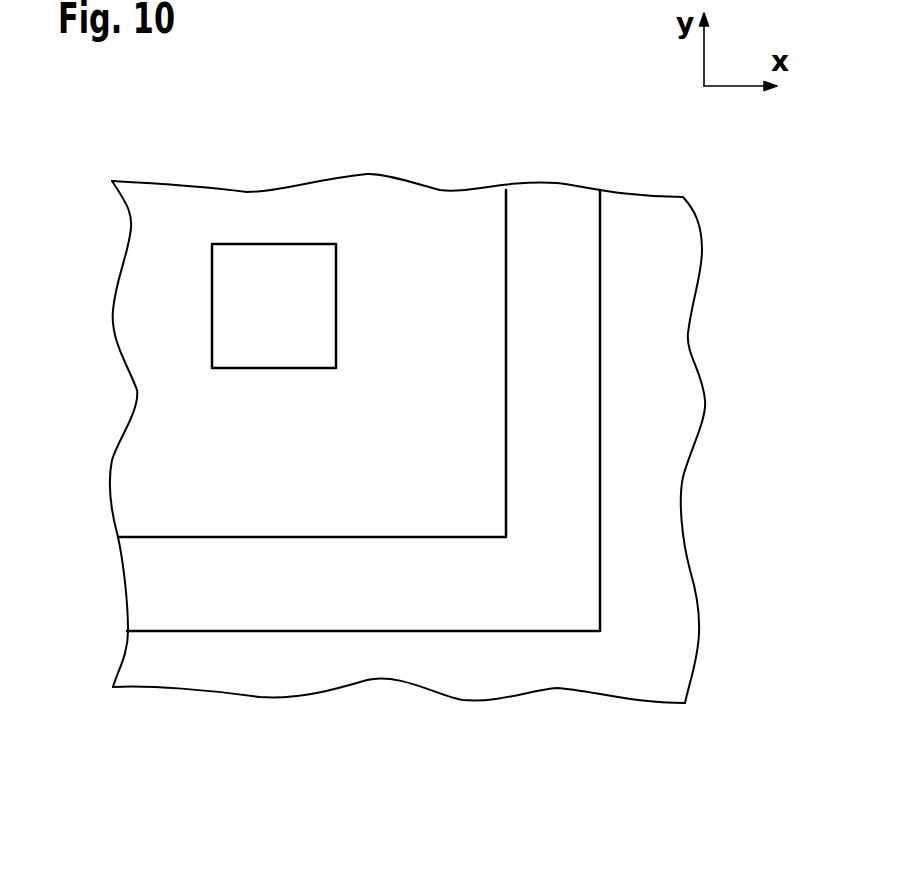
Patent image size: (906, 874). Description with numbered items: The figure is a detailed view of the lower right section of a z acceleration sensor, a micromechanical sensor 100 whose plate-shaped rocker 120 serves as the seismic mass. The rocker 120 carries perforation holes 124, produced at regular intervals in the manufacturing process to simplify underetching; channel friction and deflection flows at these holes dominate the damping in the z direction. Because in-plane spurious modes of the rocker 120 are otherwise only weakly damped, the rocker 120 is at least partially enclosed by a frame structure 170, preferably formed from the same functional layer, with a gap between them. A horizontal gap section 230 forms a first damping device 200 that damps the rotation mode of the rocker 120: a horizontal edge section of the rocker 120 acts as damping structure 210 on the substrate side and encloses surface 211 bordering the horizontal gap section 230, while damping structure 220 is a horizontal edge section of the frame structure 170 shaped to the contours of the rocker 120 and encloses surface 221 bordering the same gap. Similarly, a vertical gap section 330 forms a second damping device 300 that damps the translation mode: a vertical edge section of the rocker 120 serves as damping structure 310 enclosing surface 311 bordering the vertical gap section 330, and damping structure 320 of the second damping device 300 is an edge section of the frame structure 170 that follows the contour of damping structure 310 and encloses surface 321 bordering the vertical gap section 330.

The micromechanical sensor 100 is at (725, 710).
The rocker 120 is at (142, 455).
The perforation holes 124 is at (267, 270).
The frame structure 170 is at (698, 605).
The first damping device 200 is at (193, 658).
The damping structure 210 is at (293, 508).
The surface 211 is at (400, 538).
The damping structure 220 is at (480, 642).
The surface 221 is at (292, 610).
The horizontal gap section 230 is at (187, 585).
The second damping device 300 is at (645, 468).
The damping structure 310 is at (470, 245).
The surface 311 is at (506, 298).
The damping structure 320 is at (635, 245).
The surface 321 is at (582, 360).
The vertical gap section 330 is at (550, 228).